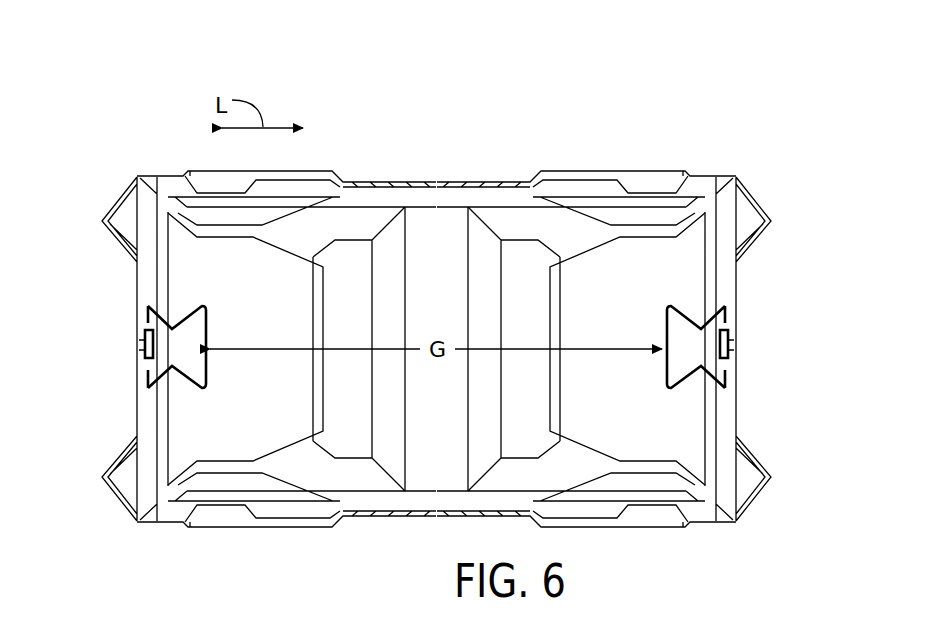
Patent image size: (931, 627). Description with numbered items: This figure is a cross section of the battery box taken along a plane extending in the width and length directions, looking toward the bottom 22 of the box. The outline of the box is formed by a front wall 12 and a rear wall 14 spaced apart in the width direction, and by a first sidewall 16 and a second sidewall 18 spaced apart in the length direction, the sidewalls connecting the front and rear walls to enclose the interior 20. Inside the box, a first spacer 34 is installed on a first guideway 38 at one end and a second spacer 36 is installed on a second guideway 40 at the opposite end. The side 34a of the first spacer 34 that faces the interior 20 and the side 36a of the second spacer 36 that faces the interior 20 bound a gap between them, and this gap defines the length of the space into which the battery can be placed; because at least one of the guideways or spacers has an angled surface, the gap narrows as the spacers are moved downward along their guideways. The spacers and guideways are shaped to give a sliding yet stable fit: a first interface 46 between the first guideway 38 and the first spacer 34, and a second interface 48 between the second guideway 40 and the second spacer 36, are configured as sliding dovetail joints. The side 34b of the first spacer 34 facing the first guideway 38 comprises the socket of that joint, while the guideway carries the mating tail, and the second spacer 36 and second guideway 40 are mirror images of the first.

The front wall 12 is at (440, 516).
The rear wall 14 is at (444, 181).
The first sidewall 16 is at (134, 433).
The second sidewall 18 is at (740, 408).
The interior 20 is at (638, 262).
The bottom 22 is at (452, 399).
The first spacer 34 is at (188, 304).
The side of the first spacer 34a is at (216, 373).
The side of the first spacer 34b is at (153, 317).
The second spacer 36 is at (712, 298).
The side of the second spacer 36a is at (663, 370).
The first guideway 38 is at (143, 345).
The second guideway 40 is at (721, 339).
The first interface 46 is at (141, 352).
The second interface 48 is at (735, 355).